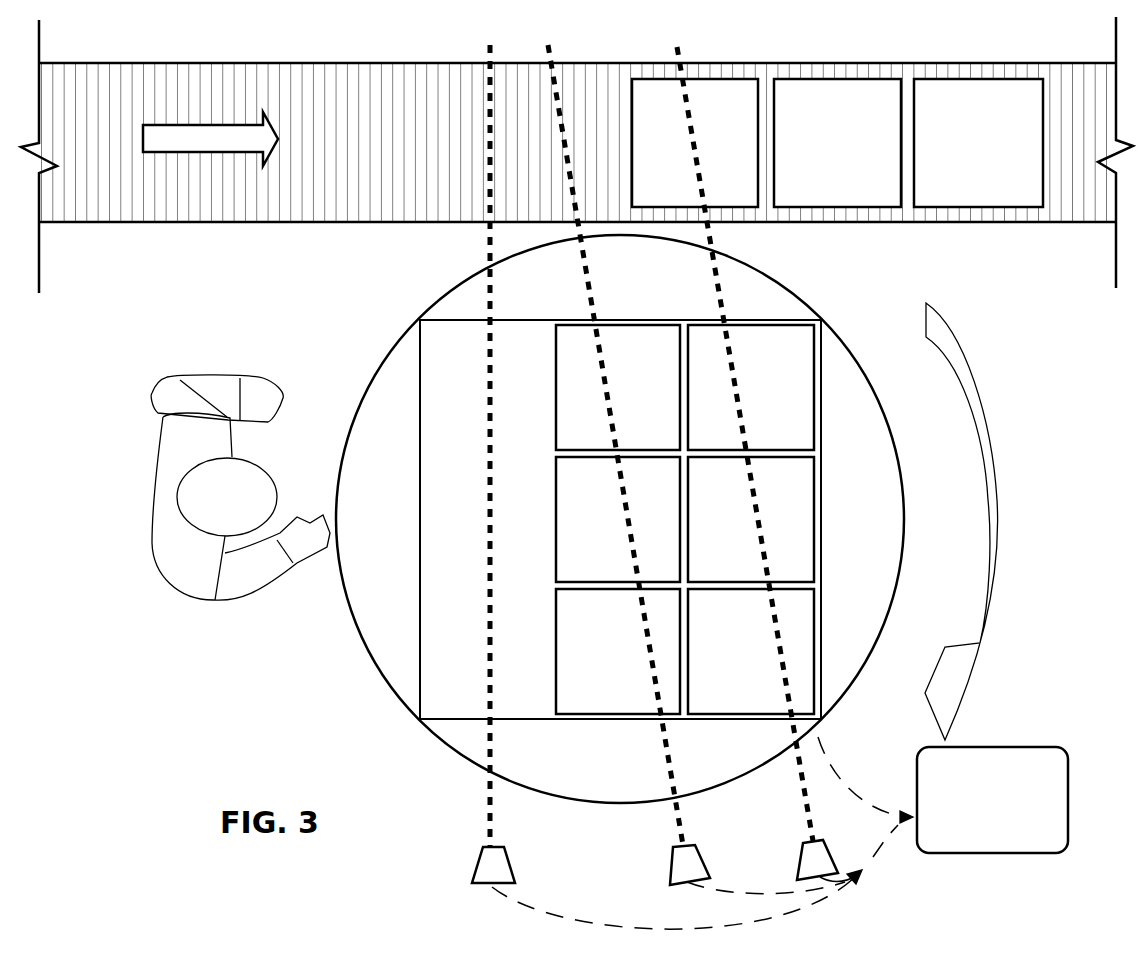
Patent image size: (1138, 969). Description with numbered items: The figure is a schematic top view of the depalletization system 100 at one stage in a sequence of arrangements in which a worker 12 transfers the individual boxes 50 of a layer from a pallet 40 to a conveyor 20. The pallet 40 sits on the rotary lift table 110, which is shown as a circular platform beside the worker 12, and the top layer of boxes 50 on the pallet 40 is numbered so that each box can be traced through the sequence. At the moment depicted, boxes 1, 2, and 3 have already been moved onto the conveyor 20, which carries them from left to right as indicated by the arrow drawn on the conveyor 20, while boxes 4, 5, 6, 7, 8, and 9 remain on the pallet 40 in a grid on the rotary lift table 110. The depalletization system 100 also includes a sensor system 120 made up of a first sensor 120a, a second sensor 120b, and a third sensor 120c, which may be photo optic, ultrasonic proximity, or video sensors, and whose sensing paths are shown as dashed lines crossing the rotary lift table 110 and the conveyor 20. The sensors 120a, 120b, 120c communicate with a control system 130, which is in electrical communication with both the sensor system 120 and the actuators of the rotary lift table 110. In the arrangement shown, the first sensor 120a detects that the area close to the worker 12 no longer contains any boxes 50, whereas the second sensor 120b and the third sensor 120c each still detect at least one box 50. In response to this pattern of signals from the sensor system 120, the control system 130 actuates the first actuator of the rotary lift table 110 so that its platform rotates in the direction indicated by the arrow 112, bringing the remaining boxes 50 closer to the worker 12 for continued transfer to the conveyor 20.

The box 1 is at (978, 143).
The box 2 is at (837, 143).
The box 3 is at (695, 143).
The box 4 is at (618, 387).
The box 5 is at (618, 519).
The box 6 is at (618, 651).
The box 7 is at (751, 387).
The box 8 is at (751, 519).
The box 9 is at (751, 651).
The worker 12 is at (155, 478).
The conveyor 20 is at (925, 222).
The pallet 40 is at (420, 607).
The boxes 50 is at (753, 519).
The depalletization system 100 is at (1015, 312).
The rotary lift table 110 is at (368, 657).
The arrow 112 is at (993, 413).
The sensor system 120 is at (884, 886).
The first sensor 120a is at (476, 860).
The second sensor 120b is at (672, 860).
The third sensor 120c is at (800, 857).
The control system 130 is at (1008, 747).